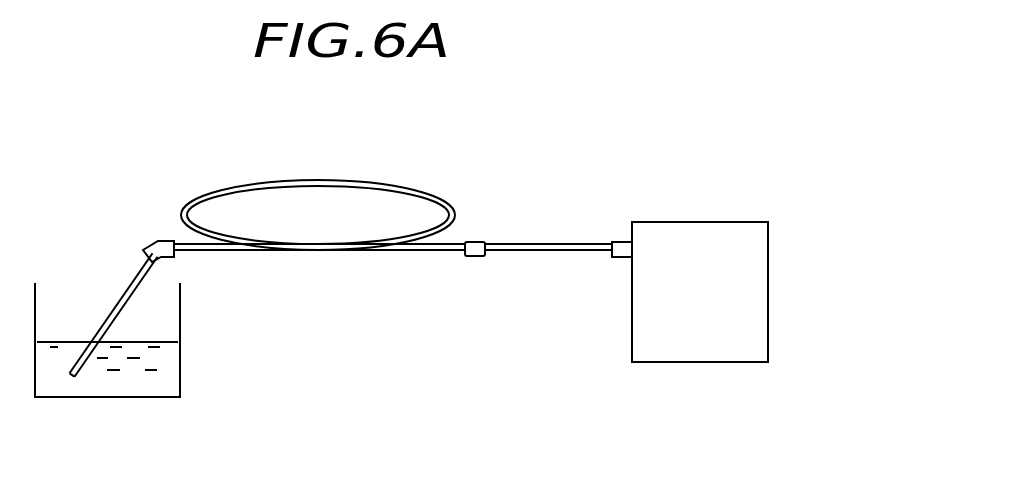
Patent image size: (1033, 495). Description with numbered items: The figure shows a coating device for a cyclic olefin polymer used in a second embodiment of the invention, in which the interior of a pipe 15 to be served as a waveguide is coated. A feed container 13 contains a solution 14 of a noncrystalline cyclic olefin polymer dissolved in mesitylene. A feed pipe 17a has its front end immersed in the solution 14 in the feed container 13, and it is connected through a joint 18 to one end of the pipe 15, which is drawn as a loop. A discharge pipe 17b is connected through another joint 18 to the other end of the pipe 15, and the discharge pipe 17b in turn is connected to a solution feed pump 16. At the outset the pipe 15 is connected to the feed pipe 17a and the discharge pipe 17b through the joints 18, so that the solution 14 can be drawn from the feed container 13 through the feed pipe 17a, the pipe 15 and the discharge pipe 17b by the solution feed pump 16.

The feed container 13 is at (181, 300).
The solution 14 is at (181, 378).
The pipe 15 is at (346, 183).
The solution feed pump 16 is at (714, 228).
The feed pipe 17a is at (113, 300).
The discharge pipe 17b is at (555, 243).
The joint 18 is at (160, 240).